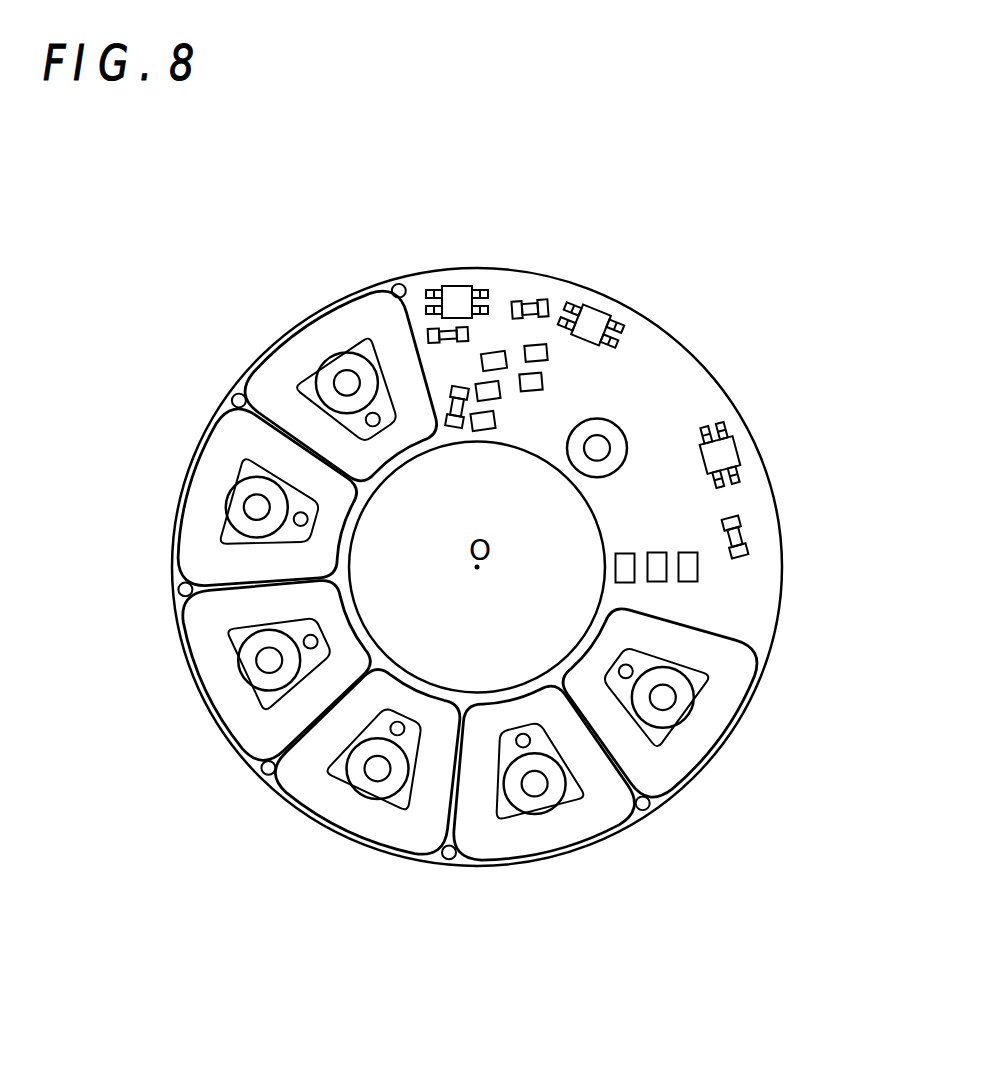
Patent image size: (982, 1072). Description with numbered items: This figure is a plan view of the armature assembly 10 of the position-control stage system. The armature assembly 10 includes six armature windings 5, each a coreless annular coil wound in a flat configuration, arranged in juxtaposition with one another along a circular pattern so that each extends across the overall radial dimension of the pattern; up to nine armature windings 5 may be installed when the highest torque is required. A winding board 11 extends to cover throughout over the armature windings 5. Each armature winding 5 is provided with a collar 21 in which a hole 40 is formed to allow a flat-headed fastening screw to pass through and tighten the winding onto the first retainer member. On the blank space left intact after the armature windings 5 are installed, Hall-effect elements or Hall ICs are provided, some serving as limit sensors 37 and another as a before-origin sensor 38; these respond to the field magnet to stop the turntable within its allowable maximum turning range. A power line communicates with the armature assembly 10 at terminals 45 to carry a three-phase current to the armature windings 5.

The armature winding 5 is at (280, 368).
The armature assembly 10 is at (762, 642).
The winding board 11 is at (737, 578).
The collar 21 is at (347, 378).
The limit sensor 37 is at (600, 320).
The before-origin sensor 38 is at (462, 292).
The hole 40 is at (332, 368).
The terminal 45 is at (397, 284).